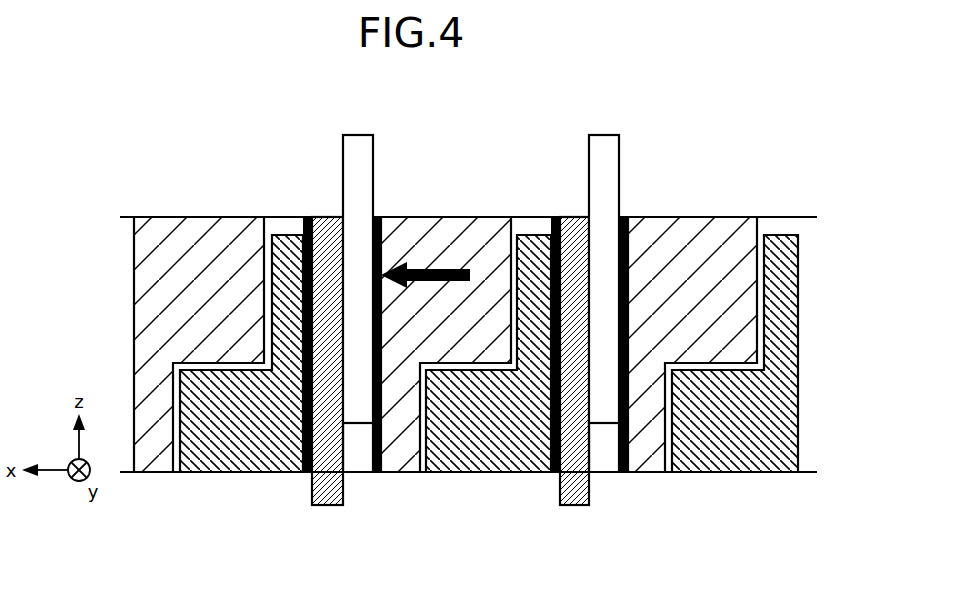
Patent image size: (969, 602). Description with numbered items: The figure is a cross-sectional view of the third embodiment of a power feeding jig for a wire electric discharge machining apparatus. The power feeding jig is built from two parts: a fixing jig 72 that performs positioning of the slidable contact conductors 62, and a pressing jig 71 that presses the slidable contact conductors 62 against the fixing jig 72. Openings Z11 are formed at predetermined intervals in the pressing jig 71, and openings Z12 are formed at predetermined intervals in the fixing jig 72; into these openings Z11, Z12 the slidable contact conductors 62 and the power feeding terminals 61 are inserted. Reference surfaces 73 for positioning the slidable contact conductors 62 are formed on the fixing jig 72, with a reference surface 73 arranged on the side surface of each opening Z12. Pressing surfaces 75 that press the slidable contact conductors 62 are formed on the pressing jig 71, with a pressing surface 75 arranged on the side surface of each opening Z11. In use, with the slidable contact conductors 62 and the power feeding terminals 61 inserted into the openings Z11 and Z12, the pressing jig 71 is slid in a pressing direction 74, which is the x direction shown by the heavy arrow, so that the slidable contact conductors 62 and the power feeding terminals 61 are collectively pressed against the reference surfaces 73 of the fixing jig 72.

The power feeding terminal 61 is at (358, 145).
The slidable contact conductor 62 is at (332, 500).
The pressing jig 71 is at (202, 227).
The fixing jig 72 is at (742, 478).
The reference surface 73 is at (303, 433).
The pressing direction 74 is at (448, 268).
The pressing surface 75 is at (381, 252).
The opening Z11 is at (278, 259).
The opening Z12 is at (417, 428).